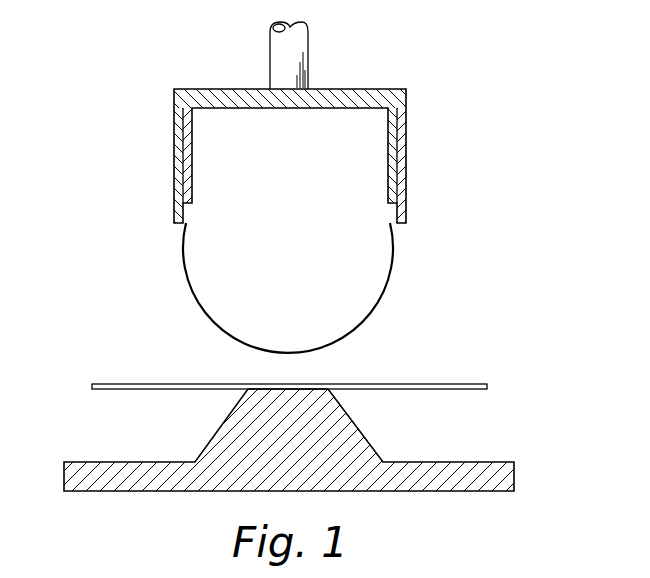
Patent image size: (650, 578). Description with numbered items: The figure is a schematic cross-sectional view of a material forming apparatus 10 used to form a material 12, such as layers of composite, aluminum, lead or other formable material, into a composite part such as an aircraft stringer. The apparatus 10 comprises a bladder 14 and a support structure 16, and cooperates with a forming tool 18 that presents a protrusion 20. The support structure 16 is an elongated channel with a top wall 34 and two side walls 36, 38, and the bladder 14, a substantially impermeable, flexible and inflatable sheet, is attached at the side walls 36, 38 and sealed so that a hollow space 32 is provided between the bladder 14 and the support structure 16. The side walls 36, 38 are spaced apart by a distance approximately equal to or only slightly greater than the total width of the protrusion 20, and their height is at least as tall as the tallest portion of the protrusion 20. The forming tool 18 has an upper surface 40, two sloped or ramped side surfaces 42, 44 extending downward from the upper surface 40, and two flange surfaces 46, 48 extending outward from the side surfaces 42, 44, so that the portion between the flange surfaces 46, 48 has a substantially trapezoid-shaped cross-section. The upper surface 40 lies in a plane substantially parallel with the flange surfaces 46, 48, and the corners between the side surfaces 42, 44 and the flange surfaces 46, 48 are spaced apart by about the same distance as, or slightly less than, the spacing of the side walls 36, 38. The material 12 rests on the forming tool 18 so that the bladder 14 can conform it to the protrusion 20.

The material forming apparatus 10 is at (547, 117).
The material 12 is at (128, 384).
The bladder 14 is at (388, 290).
The support structure 16 is at (198, 100).
The forming tool 18 is at (505, 472).
The protrusion 20 is at (335, 430).
The hollow space 32 is at (252, 163).
The top wall 34 is at (362, 100).
The side wall 36 is at (180, 124).
The side wall 38 is at (405, 130).
The upper surface 40 is at (258, 395).
The side surface 42 is at (208, 440).
The side surface 44 is at (367, 437).
The flange surface 46 is at (85, 462).
The flange surface 48 is at (490, 462).